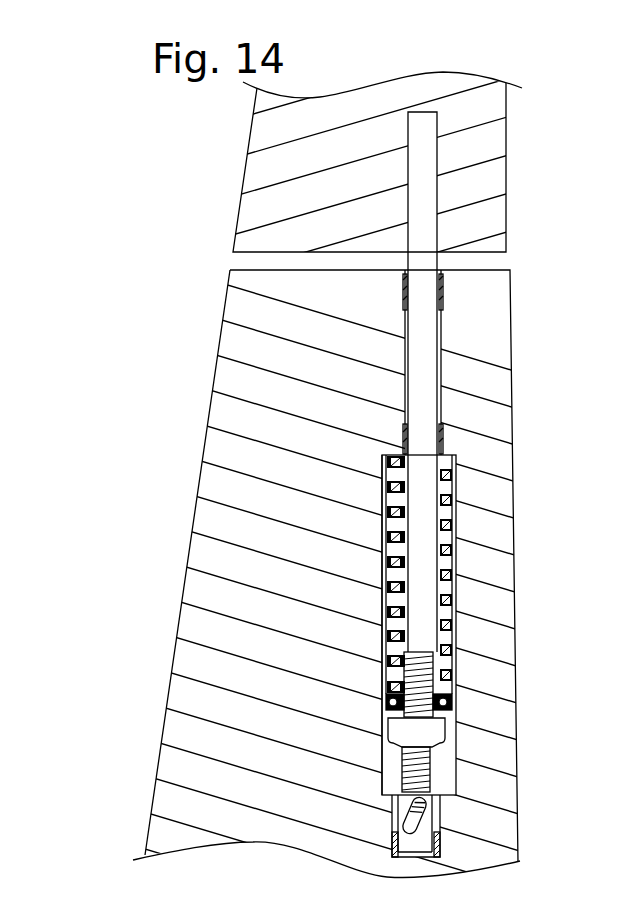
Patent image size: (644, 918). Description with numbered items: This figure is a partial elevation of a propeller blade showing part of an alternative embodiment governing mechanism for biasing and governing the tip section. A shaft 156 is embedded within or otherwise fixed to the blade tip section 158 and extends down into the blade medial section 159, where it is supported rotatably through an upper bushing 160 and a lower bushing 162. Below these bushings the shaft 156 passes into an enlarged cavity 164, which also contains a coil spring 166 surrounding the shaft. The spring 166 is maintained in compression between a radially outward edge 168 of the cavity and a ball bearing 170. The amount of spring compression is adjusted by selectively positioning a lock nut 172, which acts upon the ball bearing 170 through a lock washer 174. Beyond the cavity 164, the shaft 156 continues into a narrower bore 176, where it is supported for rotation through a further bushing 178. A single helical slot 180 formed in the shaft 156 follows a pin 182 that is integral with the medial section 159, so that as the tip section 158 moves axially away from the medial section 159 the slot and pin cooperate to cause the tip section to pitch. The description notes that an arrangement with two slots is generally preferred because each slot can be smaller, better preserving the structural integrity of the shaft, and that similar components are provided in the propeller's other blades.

The shaft 156 is at (430, 131).
The blade tip section 158 is at (512, 218).
The blade medial section 159 is at (518, 540).
The bushing 160 is at (397, 283).
The bushing 162 is at (397, 432).
The enlarged cavity 164 is at (390, 503).
The coil spring 166 is at (378, 563).
The radially outward edge of the cavity 168 is at (448, 448).
The ball bearing 170 is at (373, 692).
The lock nut 172 is at (387, 732).
The lock washer 174 is at (380, 712).
The narrower bore 176 is at (385, 831).
The bushing 178 is at (440, 847).
The helical slot 180 is at (431, 825).
The pin 182 is at (427, 788).